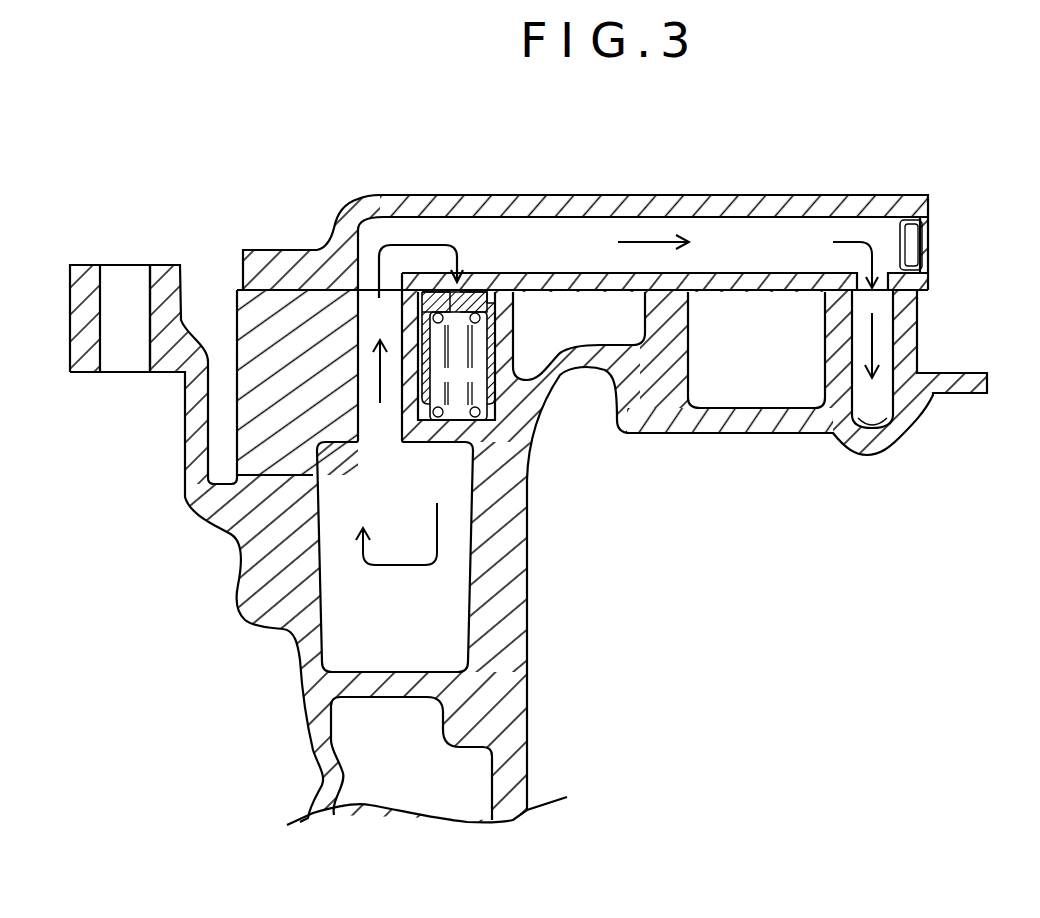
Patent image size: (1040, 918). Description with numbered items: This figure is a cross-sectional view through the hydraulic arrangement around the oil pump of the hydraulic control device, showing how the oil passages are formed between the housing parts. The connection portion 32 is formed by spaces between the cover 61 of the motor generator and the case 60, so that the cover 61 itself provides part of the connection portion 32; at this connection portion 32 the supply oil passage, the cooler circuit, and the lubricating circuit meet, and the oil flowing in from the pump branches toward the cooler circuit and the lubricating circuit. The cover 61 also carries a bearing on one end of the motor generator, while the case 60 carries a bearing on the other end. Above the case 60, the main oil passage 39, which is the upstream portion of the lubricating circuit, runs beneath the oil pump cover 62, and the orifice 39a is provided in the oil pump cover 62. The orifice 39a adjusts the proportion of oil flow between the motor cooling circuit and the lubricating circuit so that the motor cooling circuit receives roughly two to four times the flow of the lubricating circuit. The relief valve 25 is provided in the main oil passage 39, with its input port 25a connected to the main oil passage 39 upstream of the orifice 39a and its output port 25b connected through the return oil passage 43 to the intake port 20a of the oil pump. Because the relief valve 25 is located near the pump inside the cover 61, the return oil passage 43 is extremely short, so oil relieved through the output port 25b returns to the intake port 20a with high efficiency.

The case 60 is at (517, 695).
The connection portion 32 is at (350, 488).
The oil pump cover 62 is at (785, 200).
The main oil passage 39 is at (582, 242).
The orifice 39a is at (882, 290).
The intake port 20a is at (600, 317).
The cover 61 is at (765, 427).
The return oil passage 43 is at (498, 302).
The relief valve 25 is at (506, 403).
The input port 25a is at (473, 290).
The output port 25b is at (496, 300).